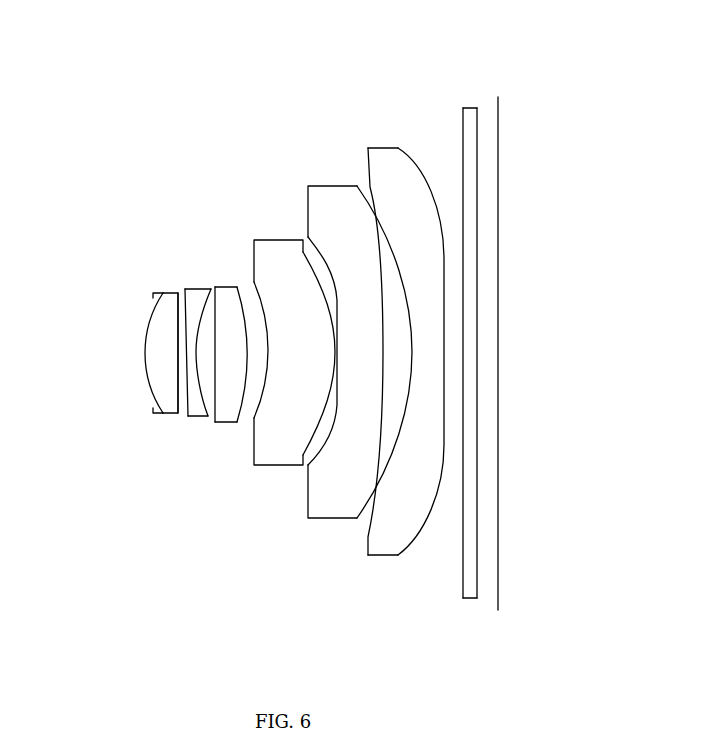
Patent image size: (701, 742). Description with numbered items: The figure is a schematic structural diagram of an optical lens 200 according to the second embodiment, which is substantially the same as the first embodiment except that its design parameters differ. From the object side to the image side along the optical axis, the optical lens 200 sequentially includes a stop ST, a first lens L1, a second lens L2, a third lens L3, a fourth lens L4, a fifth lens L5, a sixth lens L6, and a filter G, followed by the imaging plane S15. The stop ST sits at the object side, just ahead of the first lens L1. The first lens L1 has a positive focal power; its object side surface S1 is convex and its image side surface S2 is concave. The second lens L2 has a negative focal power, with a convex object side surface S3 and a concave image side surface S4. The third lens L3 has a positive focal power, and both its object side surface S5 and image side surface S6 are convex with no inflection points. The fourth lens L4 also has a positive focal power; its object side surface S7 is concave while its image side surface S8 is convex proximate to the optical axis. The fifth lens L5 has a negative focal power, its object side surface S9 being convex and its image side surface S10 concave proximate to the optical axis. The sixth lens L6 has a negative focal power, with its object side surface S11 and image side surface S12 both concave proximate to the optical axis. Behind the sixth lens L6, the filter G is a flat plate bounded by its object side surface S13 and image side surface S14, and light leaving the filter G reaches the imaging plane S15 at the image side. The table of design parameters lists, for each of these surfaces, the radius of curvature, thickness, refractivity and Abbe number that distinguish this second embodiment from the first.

The optical lens 200 is at (124, 61).
The first lens L1 is at (120, 380).
The second lens L2 is at (168, 381).
The third lens L3 is at (210, 364).
The fourth lens L4 is at (271, 364).
The fifth lens L5 is at (335, 335).
The sixth lens L6 is at (380, 323).
The stop ST is at (155, 292).
The object side surface of the first lens S1 is at (150, 322).
The image side surface of the first lens S2 is at (157, 365).
The object side surface of the second lens S3 is at (185, 287).
The image side surface of the second lens S4 is at (195, 393).
The object side surface of the third lens S5 is at (213, 285).
The image side surface of the third lens S6 is at (230, 392).
The object side surface of the fourth lens S7 is at (255, 292).
The image side surface of the fourth lens S8 is at (302, 445).
The object side surface of the fifth lens S9 is at (307, 217).
The image side surface of the fifth lens S10 is at (380, 452).
The object side surface of the sixth lens S11 is at (372, 178).
The image side surface of the sixth lens S12 is at (422, 527).
The filter G is at (441, 360).
The object side surface of the filter S13 is at (462, 167).
The image side surface of the filter S14 is at (478, 555).
The imaging plane S15 is at (500, 552).